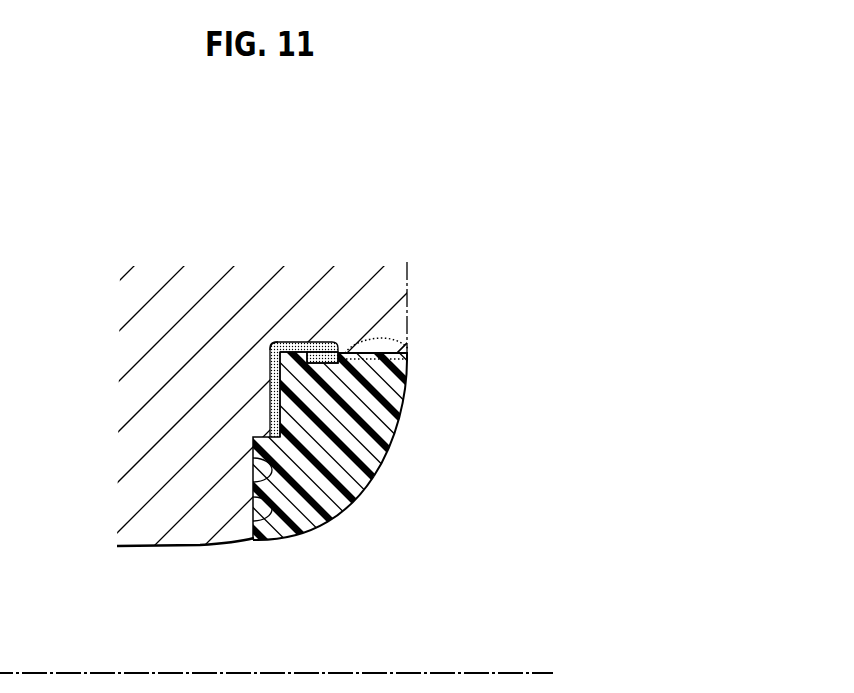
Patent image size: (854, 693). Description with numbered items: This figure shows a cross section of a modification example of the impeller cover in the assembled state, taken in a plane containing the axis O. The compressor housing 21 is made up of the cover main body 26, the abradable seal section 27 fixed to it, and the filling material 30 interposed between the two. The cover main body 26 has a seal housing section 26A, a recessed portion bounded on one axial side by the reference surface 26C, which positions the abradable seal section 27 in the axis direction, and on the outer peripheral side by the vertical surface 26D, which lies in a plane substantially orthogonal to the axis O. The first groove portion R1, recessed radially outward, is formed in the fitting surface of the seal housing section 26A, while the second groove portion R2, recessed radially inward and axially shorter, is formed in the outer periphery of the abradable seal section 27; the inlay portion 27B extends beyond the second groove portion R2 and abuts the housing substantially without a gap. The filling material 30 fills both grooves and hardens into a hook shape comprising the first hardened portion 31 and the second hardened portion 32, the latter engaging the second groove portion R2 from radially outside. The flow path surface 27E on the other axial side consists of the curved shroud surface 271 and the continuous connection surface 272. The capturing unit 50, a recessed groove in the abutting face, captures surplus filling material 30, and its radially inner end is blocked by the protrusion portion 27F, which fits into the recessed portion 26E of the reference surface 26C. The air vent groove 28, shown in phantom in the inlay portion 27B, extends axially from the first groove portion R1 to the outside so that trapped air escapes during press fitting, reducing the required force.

The compressor housing 21 is at (380, 346).
The cover main body 26 is at (385, 288).
The seal housing section 26A is at (480, 360).
The reference surface 26C is at (253, 482).
The vertical surface 26D is at (408, 322).
The recessed portion 26E is at (253, 523).
The abradable seal section 27 is at (427, 346).
The inlay portion 27B is at (348, 352).
The flow path surface 27E is at (410, 491).
The protrusion portion 27F is at (255, 524).
The shroud surface 271 is at (307, 527).
The connection surface 272 is at (402, 393).
The air vent groove 28 is at (409, 350).
The filling material 30 is at (202, 300).
The first hardened portion 31 is at (292, 345).
The second hardened portion 32 is at (323, 348).
The capturing unit 50 is at (177, 300).
The first groove portion R1 is at (268, 357).
The second groove portion R2 is at (350, 352).
The axis O is at (515, 671).